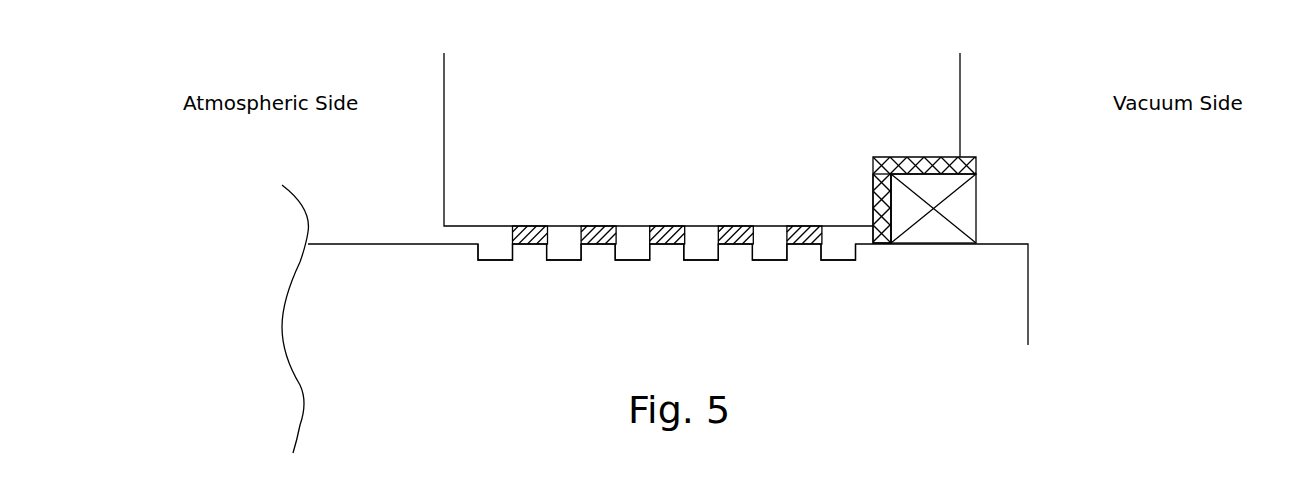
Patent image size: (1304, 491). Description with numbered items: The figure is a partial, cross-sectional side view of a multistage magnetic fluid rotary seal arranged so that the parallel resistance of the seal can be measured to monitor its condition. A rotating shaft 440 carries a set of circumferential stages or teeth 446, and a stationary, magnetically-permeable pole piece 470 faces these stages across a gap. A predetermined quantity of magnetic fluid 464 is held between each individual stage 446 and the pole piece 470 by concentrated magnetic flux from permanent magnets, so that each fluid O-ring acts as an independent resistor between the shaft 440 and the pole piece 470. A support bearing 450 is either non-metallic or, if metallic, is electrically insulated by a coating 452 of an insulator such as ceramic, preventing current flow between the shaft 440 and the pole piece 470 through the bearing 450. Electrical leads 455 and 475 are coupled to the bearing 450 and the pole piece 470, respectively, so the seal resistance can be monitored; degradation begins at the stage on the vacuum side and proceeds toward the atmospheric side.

The shaft 440 is at (385, 322).
The circumferential stages or teeth 446 is at (665, 248).
The magnetic fluid 464 is at (735, 228).
The pole piece 470 is at (663, 127).
The electrical lead 475 is at (960, 95).
The electrical lead 455 is at (977, 208).
The support bearing 450 is at (977, 224).
The coating 452 is at (882, 235).